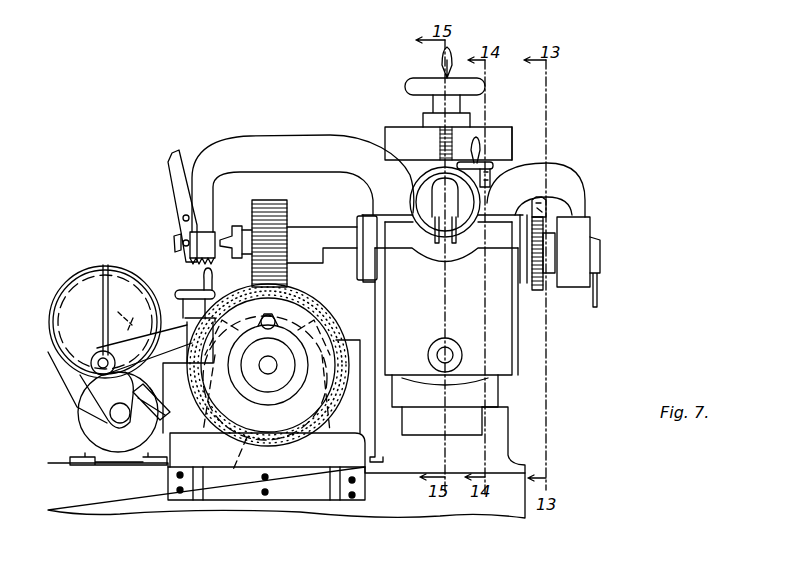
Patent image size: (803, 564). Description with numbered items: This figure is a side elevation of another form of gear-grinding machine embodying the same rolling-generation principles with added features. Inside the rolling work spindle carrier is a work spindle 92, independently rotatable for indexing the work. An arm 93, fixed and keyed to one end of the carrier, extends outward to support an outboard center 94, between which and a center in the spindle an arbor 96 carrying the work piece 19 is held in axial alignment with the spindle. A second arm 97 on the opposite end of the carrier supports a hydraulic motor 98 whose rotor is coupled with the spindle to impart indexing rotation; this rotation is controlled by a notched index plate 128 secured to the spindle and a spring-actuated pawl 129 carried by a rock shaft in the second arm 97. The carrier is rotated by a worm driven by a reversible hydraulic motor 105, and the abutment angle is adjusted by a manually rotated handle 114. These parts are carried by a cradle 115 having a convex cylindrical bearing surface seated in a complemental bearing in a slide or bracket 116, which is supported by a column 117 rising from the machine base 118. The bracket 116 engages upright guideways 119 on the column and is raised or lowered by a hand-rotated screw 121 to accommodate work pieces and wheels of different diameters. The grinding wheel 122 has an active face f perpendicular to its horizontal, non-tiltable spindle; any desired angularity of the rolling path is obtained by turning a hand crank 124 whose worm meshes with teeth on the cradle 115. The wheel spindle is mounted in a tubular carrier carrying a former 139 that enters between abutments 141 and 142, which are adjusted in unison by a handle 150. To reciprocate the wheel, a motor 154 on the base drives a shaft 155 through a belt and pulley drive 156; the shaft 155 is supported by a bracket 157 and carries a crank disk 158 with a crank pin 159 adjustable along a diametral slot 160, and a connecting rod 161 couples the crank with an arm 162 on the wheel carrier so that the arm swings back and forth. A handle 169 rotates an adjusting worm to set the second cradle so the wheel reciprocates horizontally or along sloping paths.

The work piece 19 is at (278, 208).
The work spindle 92 is at (352, 228).
The arm 93 is at (320, 136).
The outboard center 94 is at (216, 235).
The arbor 96 is at (304, 230).
The second arm 97 is at (519, 176).
The hydraulic motor 98 is at (598, 246).
The reversible hydraulic motor 105 is at (422, 198).
The handle 114 is at (478, 136).
The cradle 115 is at (442, 338).
The slide or bracket 116 is at (520, 357).
The column 117 is at (509, 445).
The machine base 118 is at (101, 494).
The upright guideways 119 is at (421, 420).
The screw 121 is at (440, 138).
The grinding wheel 122 is at (338, 323).
The hand crank 124 is at (456, 348).
The notched index plate 128 is at (544, 294).
The pawl 129 is at (545, 205).
The former 139 is at (262, 436).
The abutment 141 is at (285, 365).
The abutment 142 is at (249, 365).
The handle 150 is at (202, 283).
The motor 154 is at (85, 425).
The shaft 155 is at (105, 322).
The belt and pulley drive 156 is at (90, 390).
The bracket 157 is at (105, 322).
The crank disk 158 is at (88, 366).
The crank pin 159 is at (95, 357).
The diametral slot 160 is at (103, 310).
The connecting rod 161 is at (191, 331).
The arm 162 is at (276, 320).
The handle 169 is at (142, 418).
The active face f is at (346, 352).